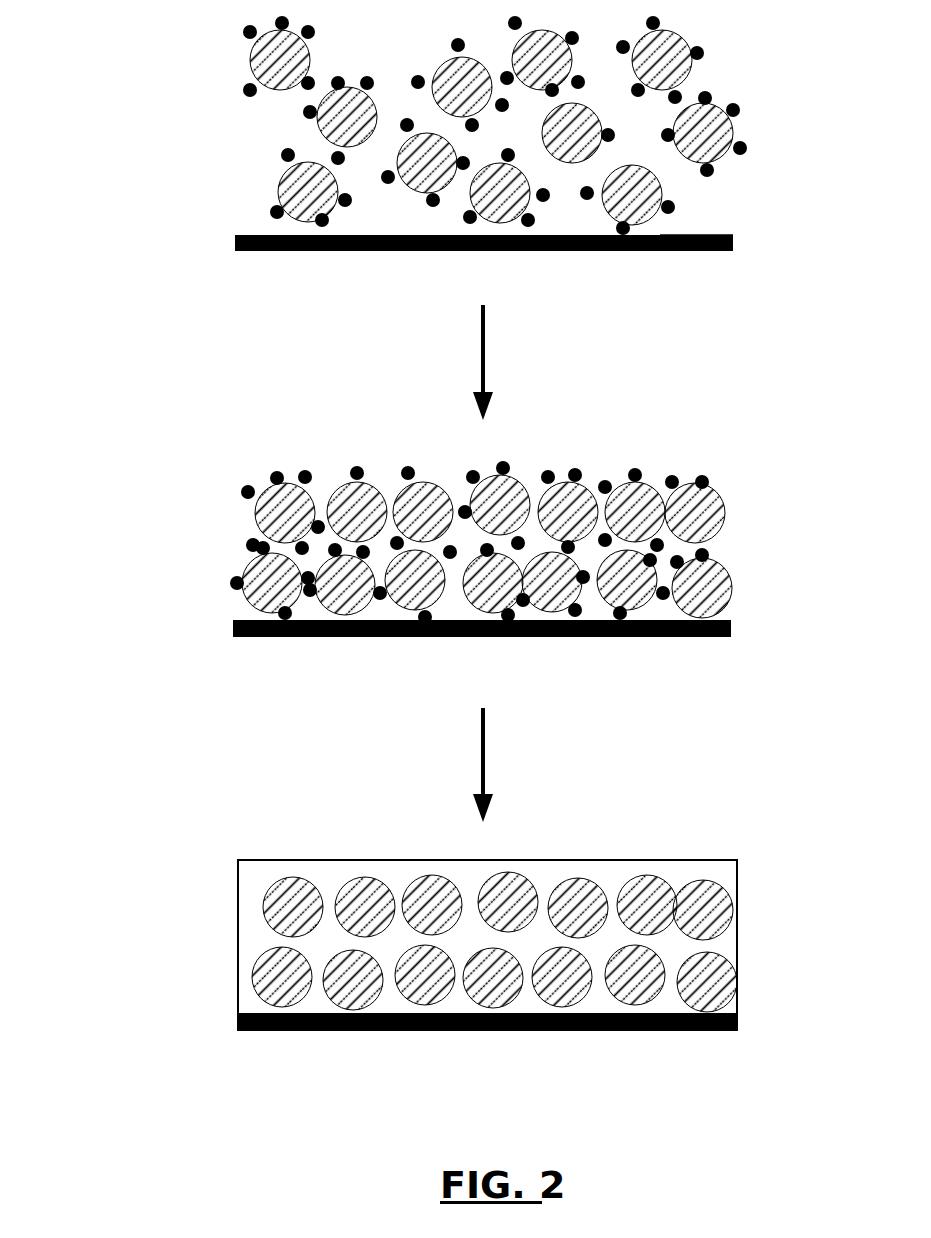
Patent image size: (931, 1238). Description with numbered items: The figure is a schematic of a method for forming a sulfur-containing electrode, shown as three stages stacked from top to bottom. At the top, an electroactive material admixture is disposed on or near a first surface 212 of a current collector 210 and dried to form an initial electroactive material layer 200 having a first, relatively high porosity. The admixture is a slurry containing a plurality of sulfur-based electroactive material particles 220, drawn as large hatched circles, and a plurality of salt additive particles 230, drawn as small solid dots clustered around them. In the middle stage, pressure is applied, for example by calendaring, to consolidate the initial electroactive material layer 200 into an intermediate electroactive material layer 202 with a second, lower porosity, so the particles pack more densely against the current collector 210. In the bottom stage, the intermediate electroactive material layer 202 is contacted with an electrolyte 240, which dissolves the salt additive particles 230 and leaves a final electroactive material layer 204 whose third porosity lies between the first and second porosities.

The initial electroactive material layer 200 is at (172, 90).
The intermediate electroactive material layer 202 is at (172, 522).
The final electroactive material layer 204 is at (172, 896).
The current collector 210 is at (235, 240).
The first surface 212 is at (692, 234).
The sulfur-based electroactive material particles 220 is at (280, 177).
The salt additive particles 230 is at (703, 52).
The electrolyte 240 is at (238, 970).